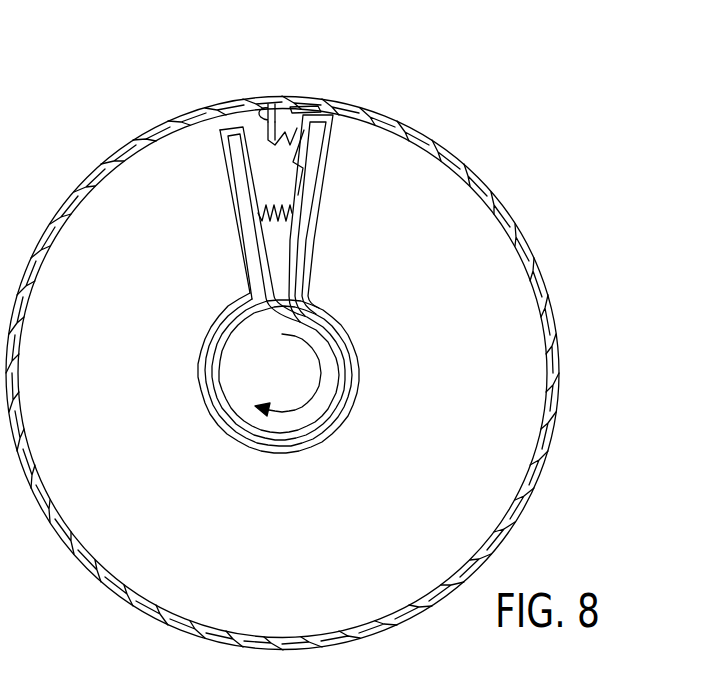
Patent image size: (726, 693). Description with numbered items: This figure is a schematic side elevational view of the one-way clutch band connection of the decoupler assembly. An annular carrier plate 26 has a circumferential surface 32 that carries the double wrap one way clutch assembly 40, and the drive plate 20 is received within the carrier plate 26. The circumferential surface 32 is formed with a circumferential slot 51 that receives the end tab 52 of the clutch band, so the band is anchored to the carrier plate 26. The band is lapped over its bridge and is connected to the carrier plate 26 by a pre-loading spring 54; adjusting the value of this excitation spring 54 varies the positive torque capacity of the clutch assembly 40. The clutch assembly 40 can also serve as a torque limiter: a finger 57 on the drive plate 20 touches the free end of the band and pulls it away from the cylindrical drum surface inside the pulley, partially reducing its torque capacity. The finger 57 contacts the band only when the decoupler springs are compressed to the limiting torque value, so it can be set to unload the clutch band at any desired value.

The double wrap one way clutch assembly 40 is at (443, 153).
The circumferential surface 32 is at (342, 118).
The circumferential slot 51 is at (262, 121).
The end tab 52 is at (280, 140).
The drive plate 20 is at (245, 222).
The finger 57 is at (238, 258).
The carrier plate 26 is at (297, 257).
The pre-loading spring 54 is at (285, 163).